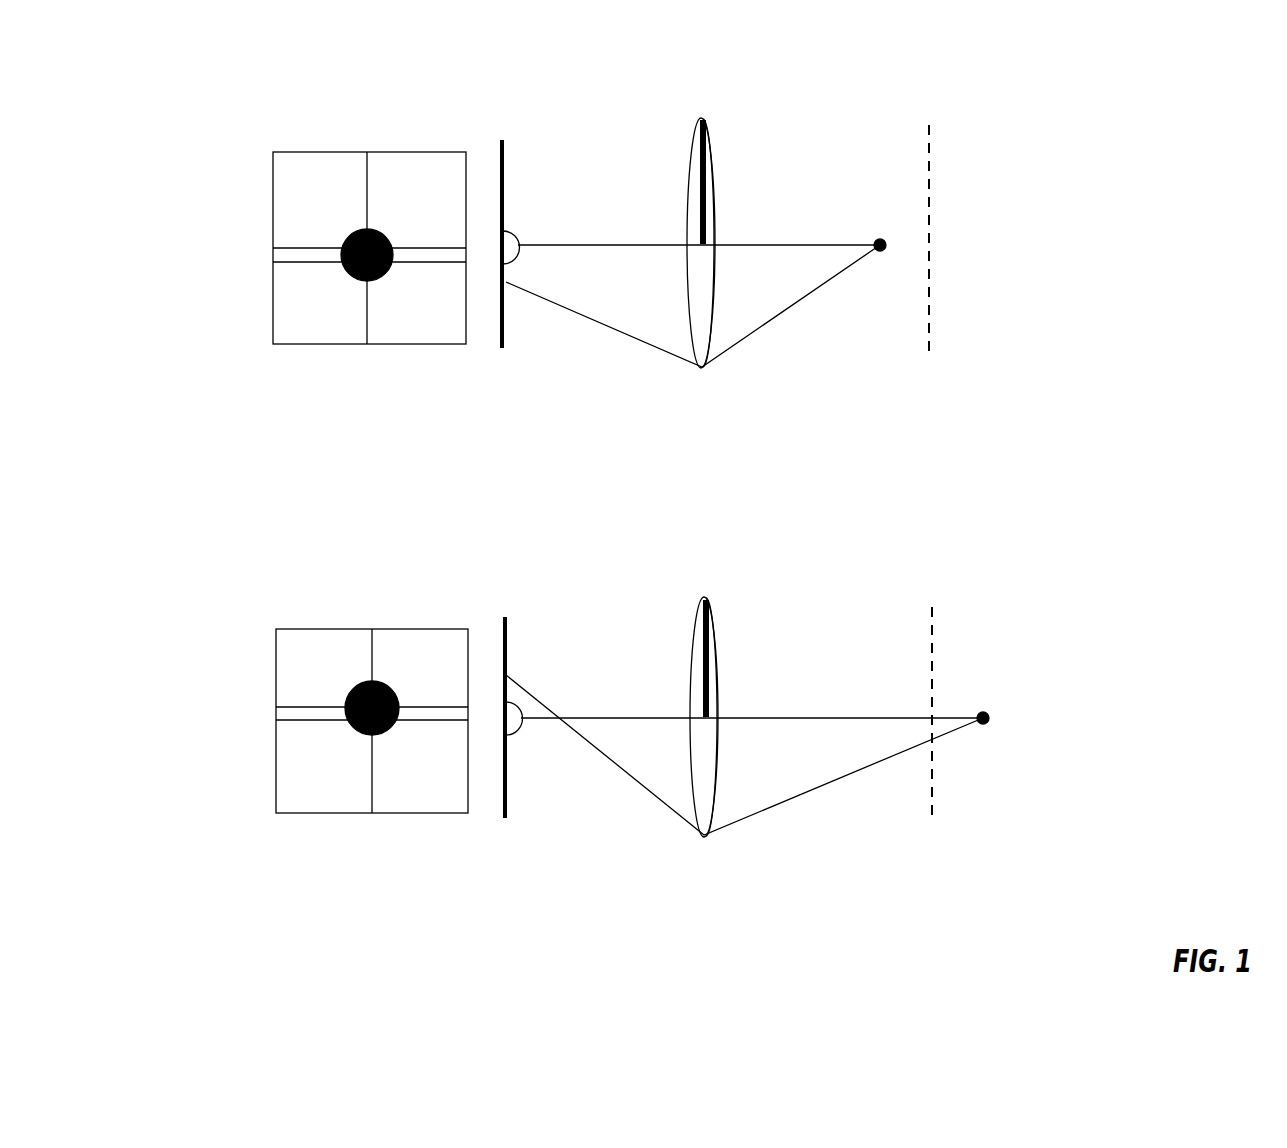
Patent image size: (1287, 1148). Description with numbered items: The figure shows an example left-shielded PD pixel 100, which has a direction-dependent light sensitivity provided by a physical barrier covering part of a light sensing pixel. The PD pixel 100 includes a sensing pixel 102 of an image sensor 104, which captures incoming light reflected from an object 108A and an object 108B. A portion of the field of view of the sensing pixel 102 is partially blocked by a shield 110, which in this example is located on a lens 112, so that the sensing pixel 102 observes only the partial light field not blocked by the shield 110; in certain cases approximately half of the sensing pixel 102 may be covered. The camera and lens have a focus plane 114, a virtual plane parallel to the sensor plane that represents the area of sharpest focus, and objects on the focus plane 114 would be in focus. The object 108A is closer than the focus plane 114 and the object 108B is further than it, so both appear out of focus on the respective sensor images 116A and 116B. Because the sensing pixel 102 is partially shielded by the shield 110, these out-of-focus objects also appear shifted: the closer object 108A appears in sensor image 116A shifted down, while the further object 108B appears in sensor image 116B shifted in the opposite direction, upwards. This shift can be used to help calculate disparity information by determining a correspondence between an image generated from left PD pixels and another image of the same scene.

The PD pixel 100 is at (172, 98).
The sensing pixel 102 is at (507, 230).
The image sensor 104 is at (502, 140).
The object 108A is at (878, 240).
The object 108B is at (985, 712).
The shield 110 is at (704, 195).
The lens 112 is at (713, 305).
The focus plane 114 is at (929, 130).
The sensor image 116A is at (302, 152).
The sensor image 116B is at (302, 629).